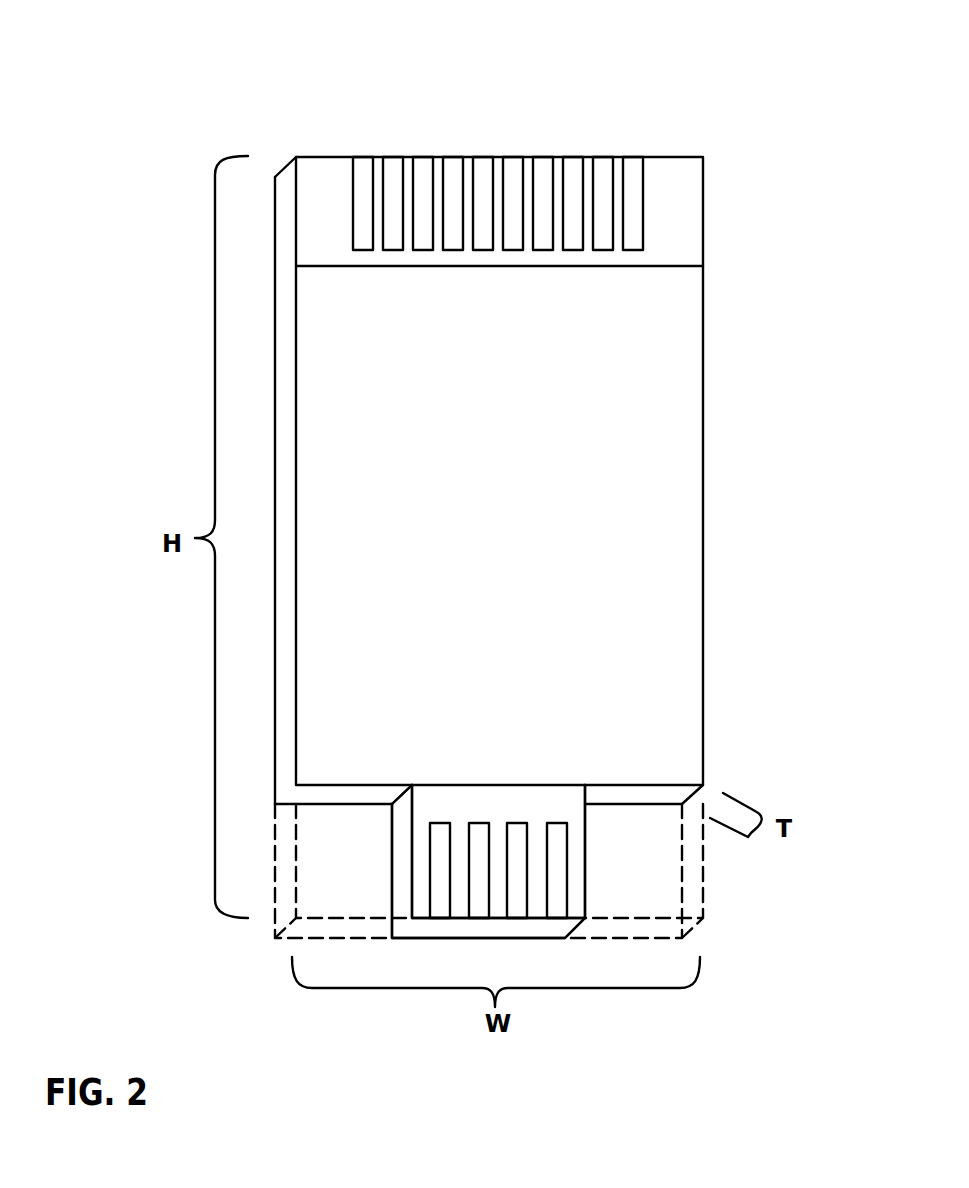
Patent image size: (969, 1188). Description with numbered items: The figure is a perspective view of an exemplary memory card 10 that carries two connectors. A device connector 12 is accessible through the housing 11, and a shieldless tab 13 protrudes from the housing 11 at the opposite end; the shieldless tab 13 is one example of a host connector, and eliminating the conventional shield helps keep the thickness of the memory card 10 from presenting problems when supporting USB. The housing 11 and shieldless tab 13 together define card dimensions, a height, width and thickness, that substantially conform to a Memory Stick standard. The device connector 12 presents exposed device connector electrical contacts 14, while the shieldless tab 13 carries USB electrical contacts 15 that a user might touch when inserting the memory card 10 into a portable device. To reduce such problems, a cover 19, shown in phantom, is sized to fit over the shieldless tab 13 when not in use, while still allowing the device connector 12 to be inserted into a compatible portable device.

The memory card 10 is at (770, 64).
The housing 11 is at (285, 382).
The device connector 12 is at (697, 223).
The shieldless tab 13 is at (578, 857).
The device connector electrical contacts 14 is at (353, 157).
The USB electrical contacts 15 is at (567, 823).
The cover 19 is at (697, 893).